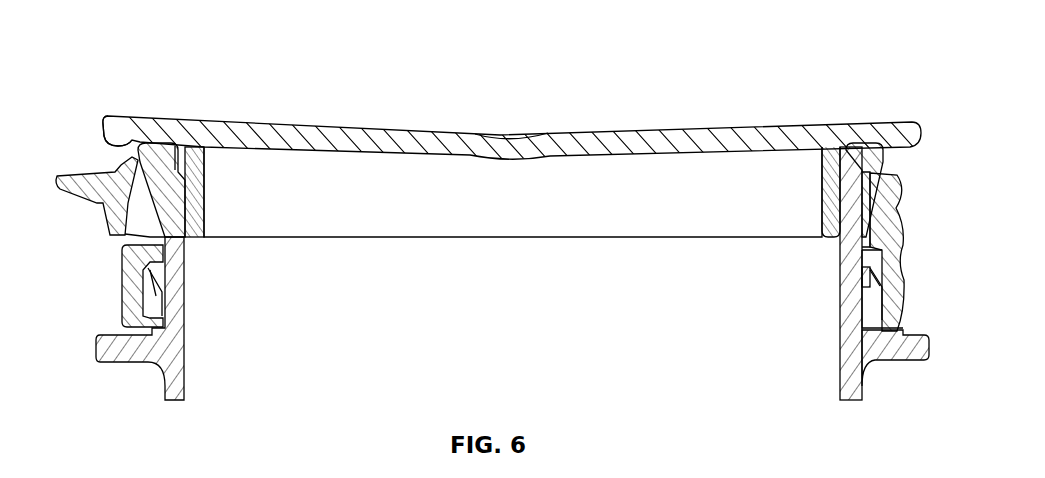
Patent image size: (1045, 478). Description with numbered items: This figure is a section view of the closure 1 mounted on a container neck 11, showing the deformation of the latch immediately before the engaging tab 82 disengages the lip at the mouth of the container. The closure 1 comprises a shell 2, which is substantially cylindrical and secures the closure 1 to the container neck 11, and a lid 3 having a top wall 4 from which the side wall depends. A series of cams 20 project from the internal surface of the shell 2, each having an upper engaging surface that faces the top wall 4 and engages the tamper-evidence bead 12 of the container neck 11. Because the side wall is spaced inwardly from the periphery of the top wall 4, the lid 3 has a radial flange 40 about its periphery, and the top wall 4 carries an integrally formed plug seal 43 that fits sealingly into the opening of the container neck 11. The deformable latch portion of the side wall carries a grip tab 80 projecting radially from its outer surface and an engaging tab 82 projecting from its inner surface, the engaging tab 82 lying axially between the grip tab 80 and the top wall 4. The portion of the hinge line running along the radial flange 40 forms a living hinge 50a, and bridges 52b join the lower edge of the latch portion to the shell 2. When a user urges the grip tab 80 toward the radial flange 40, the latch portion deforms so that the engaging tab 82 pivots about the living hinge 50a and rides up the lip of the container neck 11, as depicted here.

The closure 1 is at (860, 83).
The shell 2 is at (122, 308).
The lid 3 is at (521, 156).
The top wall 4 is at (348, 128).
The container neck 11 is at (501, 312).
The tamper-evidence bead 12 is at (866, 250).
The cam 20 is at (147, 286).
The radial flange 40 is at (112, 117).
The plug seal 43 is at (502, 207).
The living hinge 50a is at (118, 147).
The bridge 52b is at (157, 240).
The grip tab 80 is at (61, 183).
The engaging tab 82 is at (140, 180).